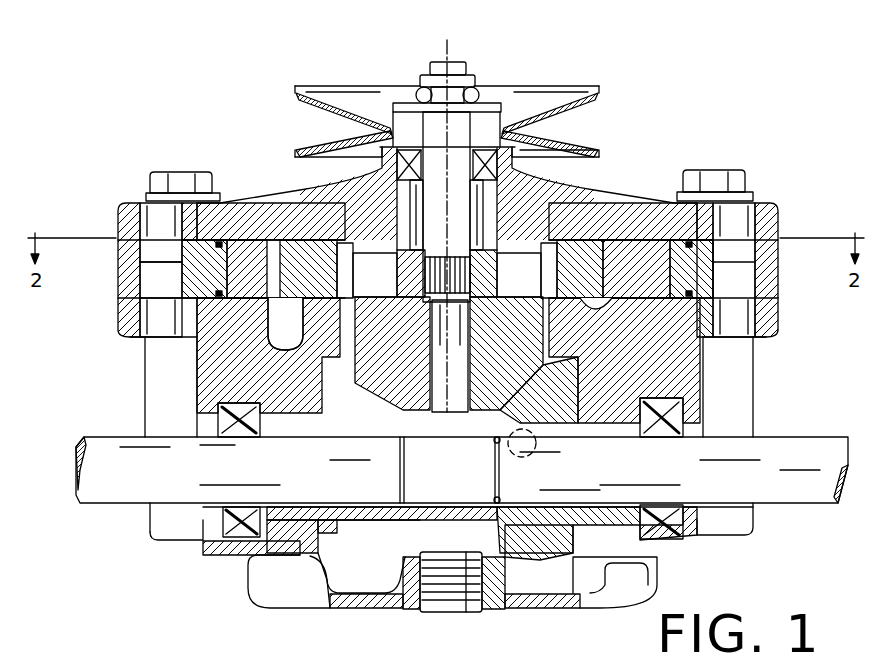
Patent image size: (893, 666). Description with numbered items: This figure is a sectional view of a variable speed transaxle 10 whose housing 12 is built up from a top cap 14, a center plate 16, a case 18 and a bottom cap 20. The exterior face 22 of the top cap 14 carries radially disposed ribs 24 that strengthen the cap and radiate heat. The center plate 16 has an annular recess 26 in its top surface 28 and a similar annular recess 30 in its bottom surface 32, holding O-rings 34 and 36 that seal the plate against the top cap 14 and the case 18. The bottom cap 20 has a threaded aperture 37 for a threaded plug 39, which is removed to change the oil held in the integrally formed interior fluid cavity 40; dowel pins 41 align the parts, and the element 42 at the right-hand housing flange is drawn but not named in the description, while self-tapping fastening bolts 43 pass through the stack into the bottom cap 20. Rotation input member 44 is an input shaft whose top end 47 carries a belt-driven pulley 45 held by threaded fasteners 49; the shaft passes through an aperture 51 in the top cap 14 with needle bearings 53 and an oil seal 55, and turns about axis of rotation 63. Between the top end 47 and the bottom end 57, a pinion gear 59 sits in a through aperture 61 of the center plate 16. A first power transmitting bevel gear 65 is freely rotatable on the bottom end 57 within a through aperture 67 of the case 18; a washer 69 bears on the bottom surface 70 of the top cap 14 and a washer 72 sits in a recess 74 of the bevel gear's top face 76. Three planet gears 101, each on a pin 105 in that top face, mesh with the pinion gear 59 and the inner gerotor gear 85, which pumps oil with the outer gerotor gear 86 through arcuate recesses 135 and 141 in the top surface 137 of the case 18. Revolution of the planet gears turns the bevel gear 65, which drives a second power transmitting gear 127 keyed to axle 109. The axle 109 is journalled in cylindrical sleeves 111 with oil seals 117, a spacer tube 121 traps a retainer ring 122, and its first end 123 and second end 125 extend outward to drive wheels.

The transaxle 10 is at (710, 94).
The housing 12 is at (758, 418).
The top cap 14 is at (126, 203).
The center plate 16 is at (130, 246).
The case 18 is at (276, 388).
The bottom cap 20 is at (274, 590).
The exterior face 22 is at (613, 222).
The ribs 24 is at (592, 200).
The annular recess 26 is at (140, 262).
The top surface 28 is at (212, 244).
The annular recess 30 is at (207, 292).
The bottom surface 32 is at (190, 338).
The O-ring 34 is at (214, 256).
The O-ring 36 is at (706, 340).
The threaded aperture 37 is at (413, 590).
The threaded plug 39 is at (463, 615).
The interior fluid cavity 40 is at (376, 560).
The dowel pins 41 is at (169, 258).
The right mounting flange 42 is at (769, 203).
The fastening bolts 43 is at (181, 172).
The rotation input member 44 is at (462, 142).
The pulley 45 is at (333, 86).
The top end 47 is at (452, 64).
The threaded fasteners 49 is at (418, 93).
The aperture 51 is at (410, 211).
The needle bearings 53 is at (486, 216).
The oil seal 55 is at (568, 127).
The bottom end 57 is at (444, 374).
The pinion gear 59 is at (421, 303).
The through aperture 61 is at (651, 296).
The axis of rotation 63 is at (447, 55).
The first power transmitting bevel gear 65 is at (511, 380).
The through aperture 67 is at (340, 332).
The washer 69 is at (482, 240).
The bottom surface 70 is at (404, 233).
The washer 72 is at (506, 353).
The recess 74 is at (392, 353).
The top face 76 is at (379, 297).
The inner gerotor gear 85 is at (583, 256).
The outer gerotor gear 86 is at (638, 258).
The planet gears 101 is at (600, 296).
The pin 105 is at (431, 254).
The axle 109 is at (131, 498).
The cylindrical sleeves 111 is at (300, 428).
The oil seals 117 is at (210, 518).
The spacer tube 121 is at (420, 518).
The retainer ring 122 is at (522, 582).
The first end 123 is at (73, 492).
The second end 125 is at (850, 445).
The second power transmitting gear 127 is at (547, 440).
The arcuate recess 135 is at (273, 345).
The top surface 137 is at (592, 262).
The arcuate recess 141 is at (574, 376).